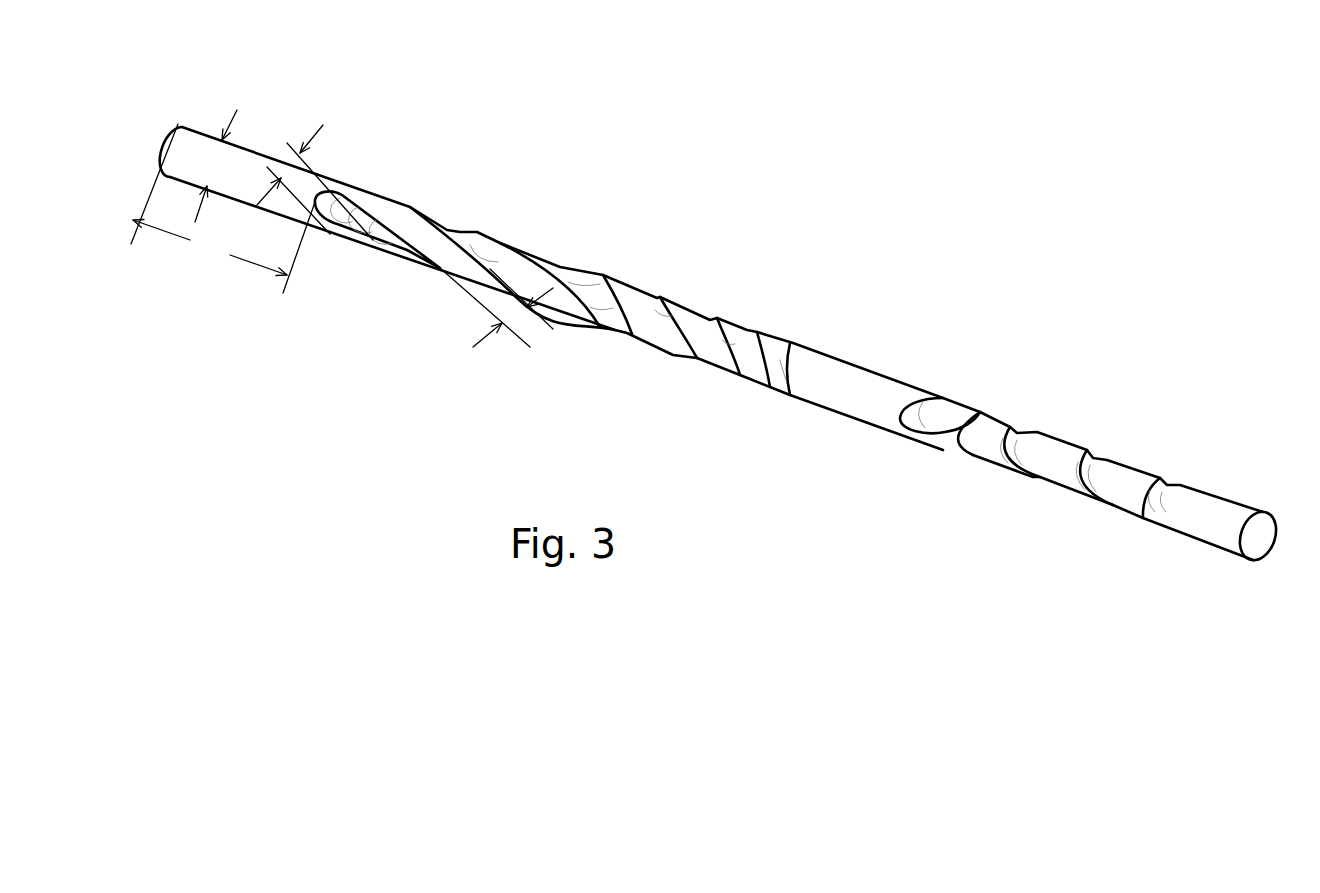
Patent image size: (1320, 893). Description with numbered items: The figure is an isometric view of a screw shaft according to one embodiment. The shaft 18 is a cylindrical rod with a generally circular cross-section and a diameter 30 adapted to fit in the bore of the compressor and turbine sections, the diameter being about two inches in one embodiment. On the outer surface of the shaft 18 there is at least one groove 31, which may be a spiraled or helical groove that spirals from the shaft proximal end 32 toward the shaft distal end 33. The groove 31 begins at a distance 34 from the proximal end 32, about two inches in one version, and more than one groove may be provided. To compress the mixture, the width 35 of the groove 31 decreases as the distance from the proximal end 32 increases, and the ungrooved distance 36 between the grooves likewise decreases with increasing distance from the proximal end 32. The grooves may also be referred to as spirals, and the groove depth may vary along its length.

The shaft 18 is at (673, 262).
The diameter 30 is at (216, 166).
The groove 31 is at (363, 226).
The shaft proximal end 32 is at (183, 112).
The shaft distal end 33 is at (1273, 500).
The distance 34 is at (223, 208).
The width 35 is at (315, 182).
The ungrooved distance 36 is at (496, 307).